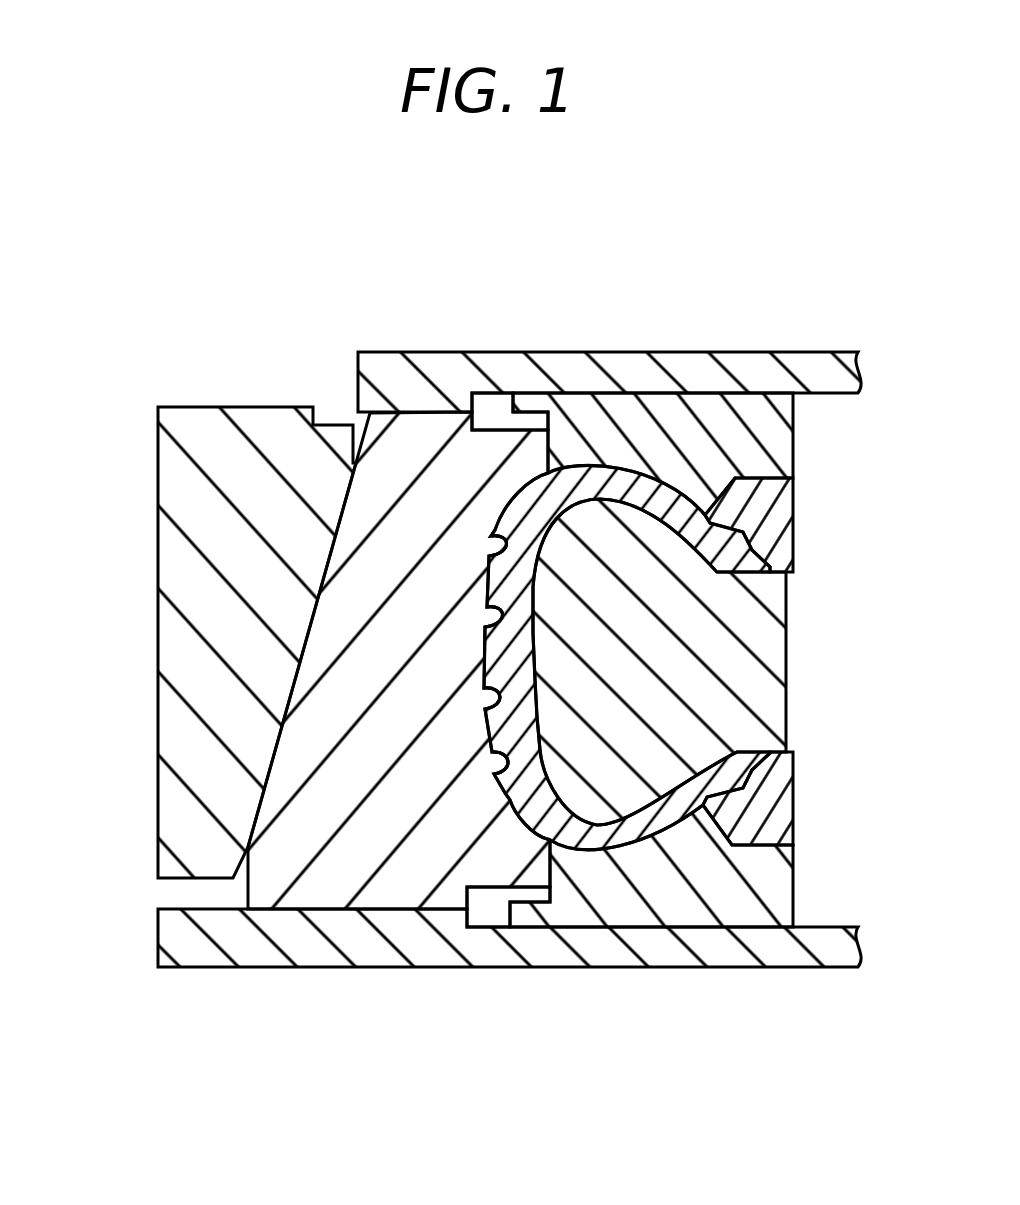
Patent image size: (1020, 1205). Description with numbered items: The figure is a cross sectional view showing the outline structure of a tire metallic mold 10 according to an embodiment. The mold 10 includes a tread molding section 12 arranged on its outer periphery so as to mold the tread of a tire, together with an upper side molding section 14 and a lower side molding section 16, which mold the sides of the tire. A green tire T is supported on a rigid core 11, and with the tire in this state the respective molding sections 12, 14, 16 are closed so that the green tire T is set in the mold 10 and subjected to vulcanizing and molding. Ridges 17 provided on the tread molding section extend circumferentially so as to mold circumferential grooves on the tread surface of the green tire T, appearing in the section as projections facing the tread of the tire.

The tire metallic mold 10 is at (470, 237).
The rigid core 11 is at (745, 677).
The tread molding section 12 is at (316, 672).
The upper side molding section 14 is at (713, 420).
The lower side molding section 16 is at (688, 893).
The ridges 17 is at (505, 703).
The green tire T is at (526, 797).